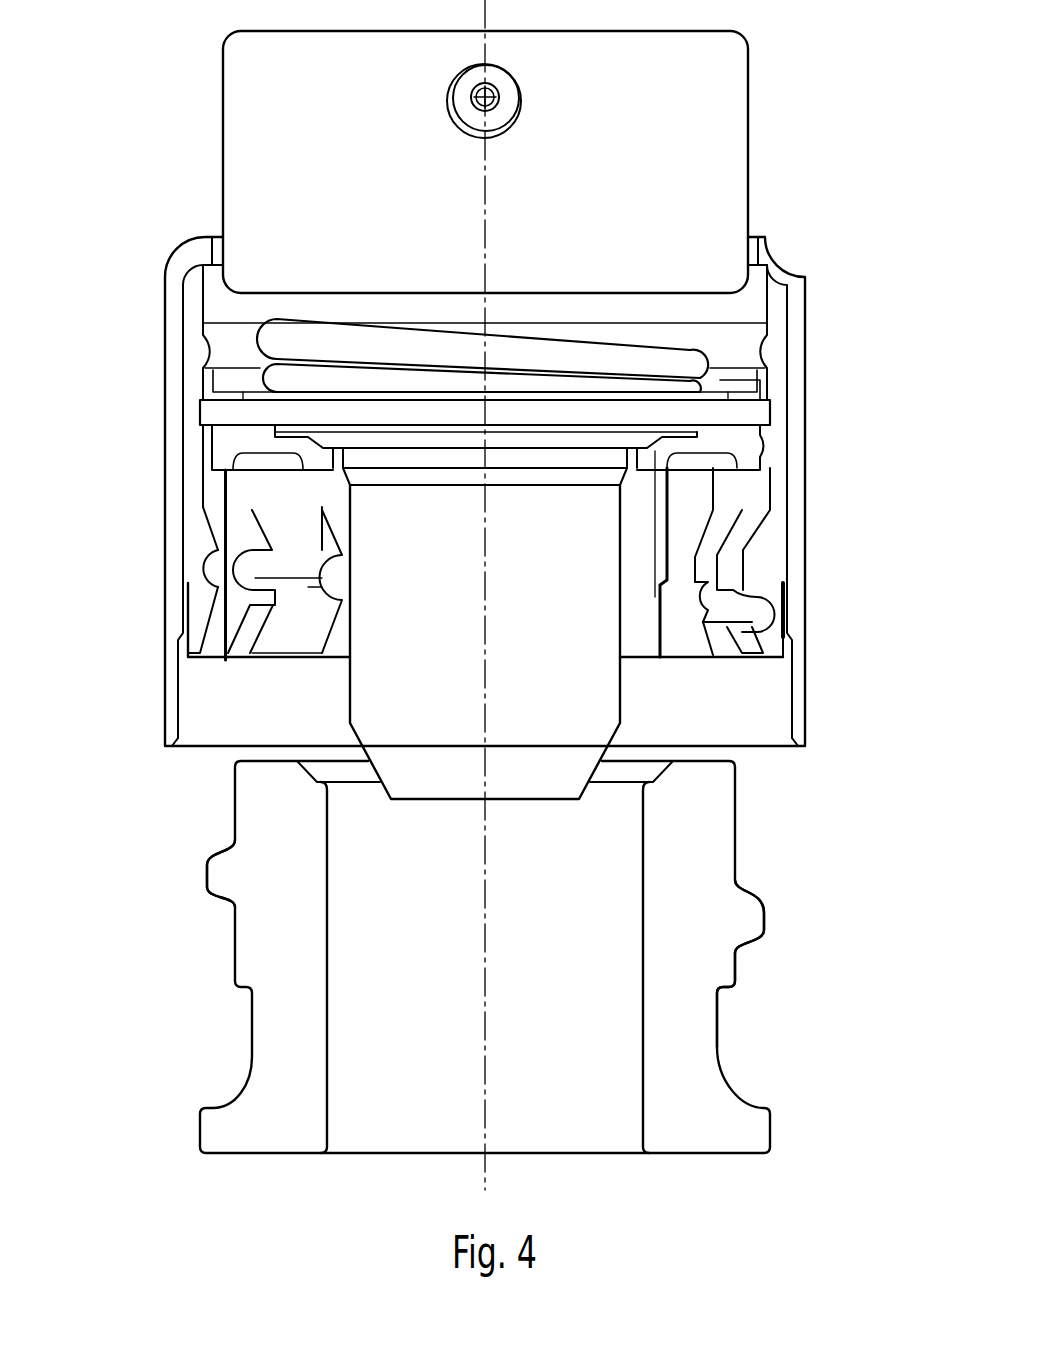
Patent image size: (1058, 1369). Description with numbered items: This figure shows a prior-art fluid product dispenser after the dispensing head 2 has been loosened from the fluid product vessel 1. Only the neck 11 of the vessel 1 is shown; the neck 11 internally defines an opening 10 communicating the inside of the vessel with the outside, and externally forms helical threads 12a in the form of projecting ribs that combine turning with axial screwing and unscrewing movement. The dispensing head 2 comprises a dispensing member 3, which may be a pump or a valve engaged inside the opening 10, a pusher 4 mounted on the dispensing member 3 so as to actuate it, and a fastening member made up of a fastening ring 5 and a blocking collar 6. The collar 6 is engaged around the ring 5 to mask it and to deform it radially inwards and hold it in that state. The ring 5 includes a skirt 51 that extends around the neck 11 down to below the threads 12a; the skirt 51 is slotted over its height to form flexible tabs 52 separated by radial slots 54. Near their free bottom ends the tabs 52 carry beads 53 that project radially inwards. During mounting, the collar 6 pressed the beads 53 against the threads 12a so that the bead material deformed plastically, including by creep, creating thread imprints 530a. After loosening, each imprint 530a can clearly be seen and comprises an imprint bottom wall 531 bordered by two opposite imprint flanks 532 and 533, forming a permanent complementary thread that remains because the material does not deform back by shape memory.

The fluid product vessel 1 is at (470, 1010).
The dispensing head 2 is at (505, 510).
The dispensing member 3 is at (404, 674).
The pusher 4 is at (720, 97).
The fastening ring 5 is at (781, 382).
The blocking collar 6 is at (802, 300).
The opening 10 is at (381, 1108).
The neck 11 is at (682, 1051).
The helical threads 12a is at (217, 871).
The skirt 51 is at (781, 466).
The flexible tabs 52 is at (776, 498).
The beads 53 is at (752, 578).
The radial slots 54 is at (680, 637).
The thread imprints 530a is at (750, 612).
The imprint bottom wall 531 is at (204, 569).
The imprint flank 532 is at (216, 612).
The imprint flank 533 is at (217, 547).